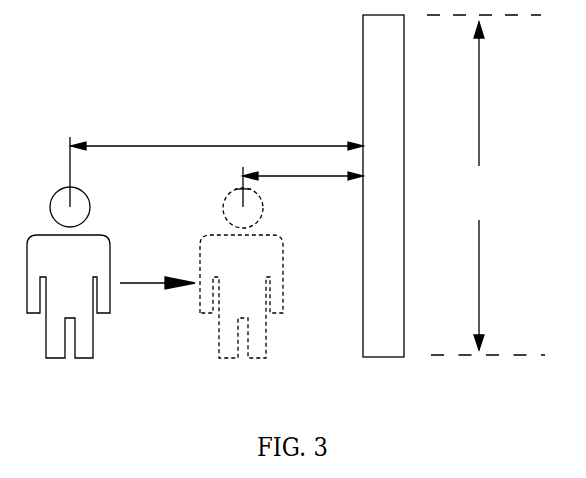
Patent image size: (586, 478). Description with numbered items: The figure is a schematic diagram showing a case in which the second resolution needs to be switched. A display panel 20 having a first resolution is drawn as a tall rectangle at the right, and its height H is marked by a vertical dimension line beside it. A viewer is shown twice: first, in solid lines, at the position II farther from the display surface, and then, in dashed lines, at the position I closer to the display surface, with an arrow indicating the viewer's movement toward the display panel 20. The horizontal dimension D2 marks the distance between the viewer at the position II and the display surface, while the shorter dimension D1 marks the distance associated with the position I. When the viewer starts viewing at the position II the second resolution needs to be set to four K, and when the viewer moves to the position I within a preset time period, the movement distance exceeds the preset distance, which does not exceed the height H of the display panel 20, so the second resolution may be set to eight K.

The display panel 20 is at (383, 34).
The distance D1 is at (299, 179).
The distance D2 is at (216, 165).
The height of the display panel H is at (486, 185).
The position I is at (241, 298).
The position II is at (68, 297).